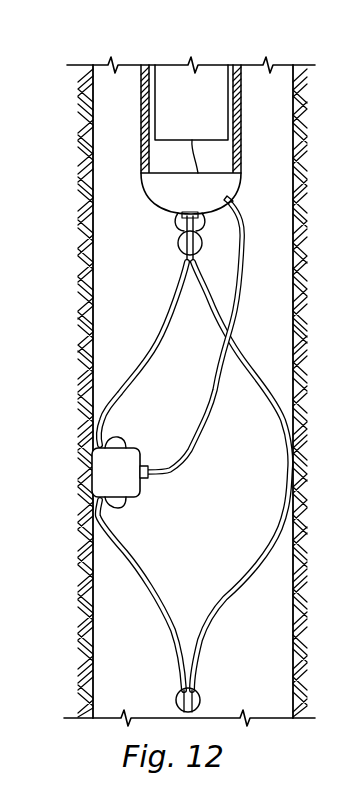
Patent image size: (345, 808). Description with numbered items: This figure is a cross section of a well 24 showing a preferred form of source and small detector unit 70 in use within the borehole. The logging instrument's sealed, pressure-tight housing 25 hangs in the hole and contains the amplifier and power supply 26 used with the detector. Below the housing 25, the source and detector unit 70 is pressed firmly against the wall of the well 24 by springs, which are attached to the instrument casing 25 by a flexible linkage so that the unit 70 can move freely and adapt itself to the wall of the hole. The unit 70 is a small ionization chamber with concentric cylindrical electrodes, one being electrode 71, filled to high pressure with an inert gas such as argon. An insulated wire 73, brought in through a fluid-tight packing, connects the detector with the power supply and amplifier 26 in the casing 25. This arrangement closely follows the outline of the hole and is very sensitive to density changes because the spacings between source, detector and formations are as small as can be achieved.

The well 24 is at (92, 301).
The housing 25 is at (242, 115).
The amplifier and power supply 26 is at (170, 65).
The source and small detector unit 70 is at (138, 497).
The cylindrical electrode 71 is at (223, 593).
The insulated wire 73 is at (237, 308).